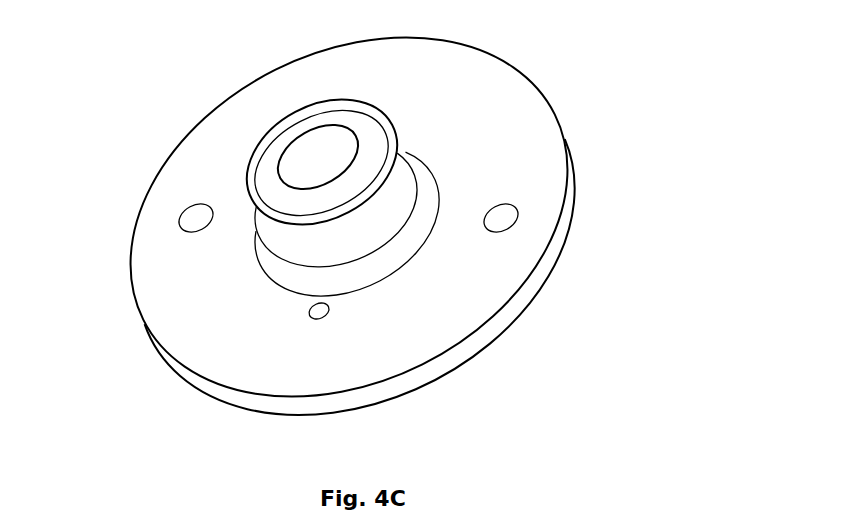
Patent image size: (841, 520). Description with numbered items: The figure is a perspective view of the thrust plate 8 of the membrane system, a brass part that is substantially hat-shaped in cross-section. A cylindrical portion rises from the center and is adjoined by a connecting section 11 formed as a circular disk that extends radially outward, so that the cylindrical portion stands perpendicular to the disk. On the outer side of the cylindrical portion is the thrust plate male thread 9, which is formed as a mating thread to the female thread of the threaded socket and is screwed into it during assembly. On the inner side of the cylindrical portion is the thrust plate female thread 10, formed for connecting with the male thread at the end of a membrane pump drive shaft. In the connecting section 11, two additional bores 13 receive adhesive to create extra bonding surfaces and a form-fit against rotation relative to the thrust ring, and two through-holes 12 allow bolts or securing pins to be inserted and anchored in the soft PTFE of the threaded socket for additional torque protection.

The thrust plate 8 is at (600, 97).
The thrust plate male thread 9 is at (378, 230).
The thrust plate female thread 10 is at (306, 146).
The connecting section 11 is at (475, 289).
The through-holes 12 is at (307, 308).
The additional bores 13 is at (190, 220).